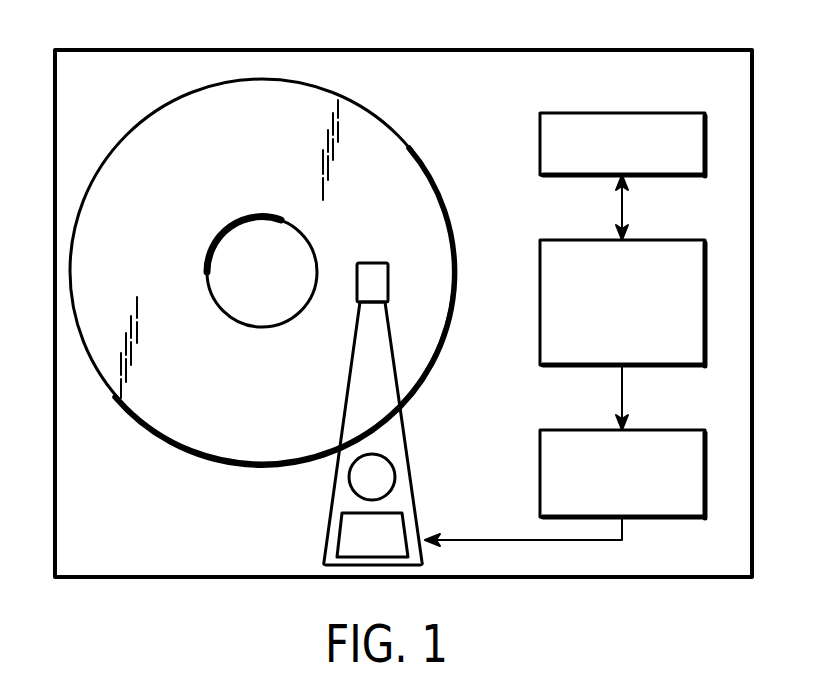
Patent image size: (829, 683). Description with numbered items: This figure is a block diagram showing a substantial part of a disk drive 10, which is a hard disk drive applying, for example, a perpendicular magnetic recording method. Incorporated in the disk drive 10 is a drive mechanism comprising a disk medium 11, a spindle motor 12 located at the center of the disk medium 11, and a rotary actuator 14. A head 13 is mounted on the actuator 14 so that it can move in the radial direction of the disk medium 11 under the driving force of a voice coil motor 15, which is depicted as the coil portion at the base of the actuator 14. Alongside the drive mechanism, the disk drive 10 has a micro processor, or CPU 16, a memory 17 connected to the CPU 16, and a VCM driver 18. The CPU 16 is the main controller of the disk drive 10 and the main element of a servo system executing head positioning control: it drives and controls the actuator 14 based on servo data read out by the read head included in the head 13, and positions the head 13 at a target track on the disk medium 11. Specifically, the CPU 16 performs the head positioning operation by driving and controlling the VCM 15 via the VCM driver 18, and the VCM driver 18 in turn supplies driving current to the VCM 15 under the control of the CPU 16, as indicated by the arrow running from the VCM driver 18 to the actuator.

The disk drive 10 is at (500, 50).
The disk medium 11 is at (222, 80).
The spindle motor 12 is at (256, 293).
The head 13 is at (388, 280).
The rotary actuator 14 is at (410, 470).
The voice coil motor 15 is at (340, 535).
The micro processor 16 is at (656, 240).
The memory 17 is at (653, 113).
The VCM driver 18 is at (658, 430).